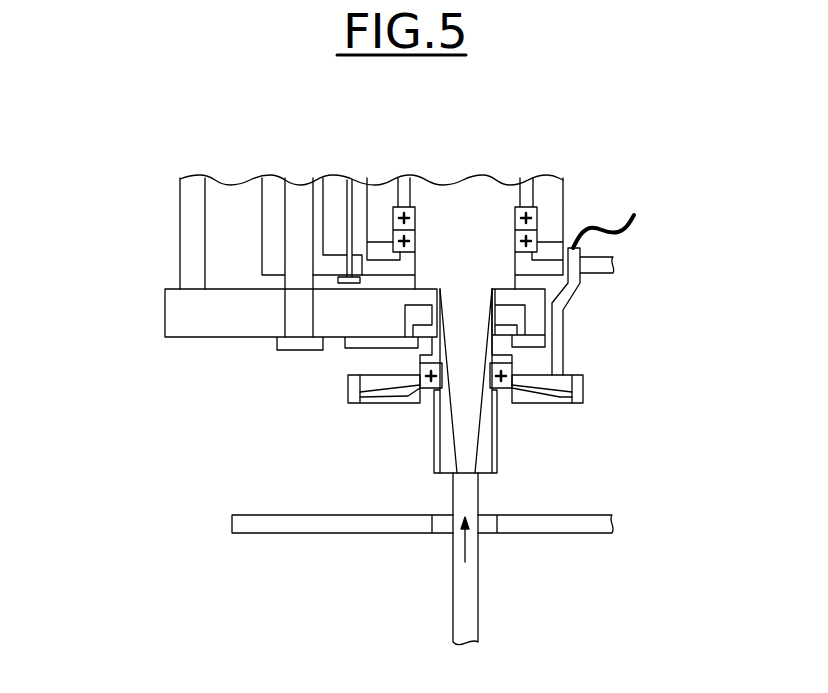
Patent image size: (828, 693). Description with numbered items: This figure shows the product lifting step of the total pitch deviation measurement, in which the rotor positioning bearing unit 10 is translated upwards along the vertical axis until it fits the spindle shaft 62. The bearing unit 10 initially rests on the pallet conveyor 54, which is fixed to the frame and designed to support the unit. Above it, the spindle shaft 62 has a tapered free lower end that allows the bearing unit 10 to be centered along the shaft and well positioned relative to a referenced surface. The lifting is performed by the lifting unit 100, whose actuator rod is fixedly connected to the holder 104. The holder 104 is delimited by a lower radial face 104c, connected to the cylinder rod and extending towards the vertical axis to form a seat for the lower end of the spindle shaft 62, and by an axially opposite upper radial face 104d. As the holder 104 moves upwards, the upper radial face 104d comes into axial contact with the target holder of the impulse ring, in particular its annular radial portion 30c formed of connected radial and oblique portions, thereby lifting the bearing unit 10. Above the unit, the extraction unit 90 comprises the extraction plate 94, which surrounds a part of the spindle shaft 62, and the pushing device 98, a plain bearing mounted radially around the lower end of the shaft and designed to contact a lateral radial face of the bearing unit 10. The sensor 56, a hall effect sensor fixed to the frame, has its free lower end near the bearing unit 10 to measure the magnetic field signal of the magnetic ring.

The extraction unit 90 is at (150, 243).
The extraction plate 94 is at (172, 318).
The pushing device 98 is at (495, 340).
The spindle shaft 62 is at (473, 435).
The holder 104 is at (443, 455).
The upper radial face 104d is at (432, 390).
The lower radial face 104c is at (497, 475).
The rotor positioning bearing unit 10 is at (581, 392).
The annular radial portion 30c is at (360, 395).
The sensor 56 is at (557, 323).
The pallet conveyor 54 is at (235, 525).
The lifting unit 100 is at (543, 572).